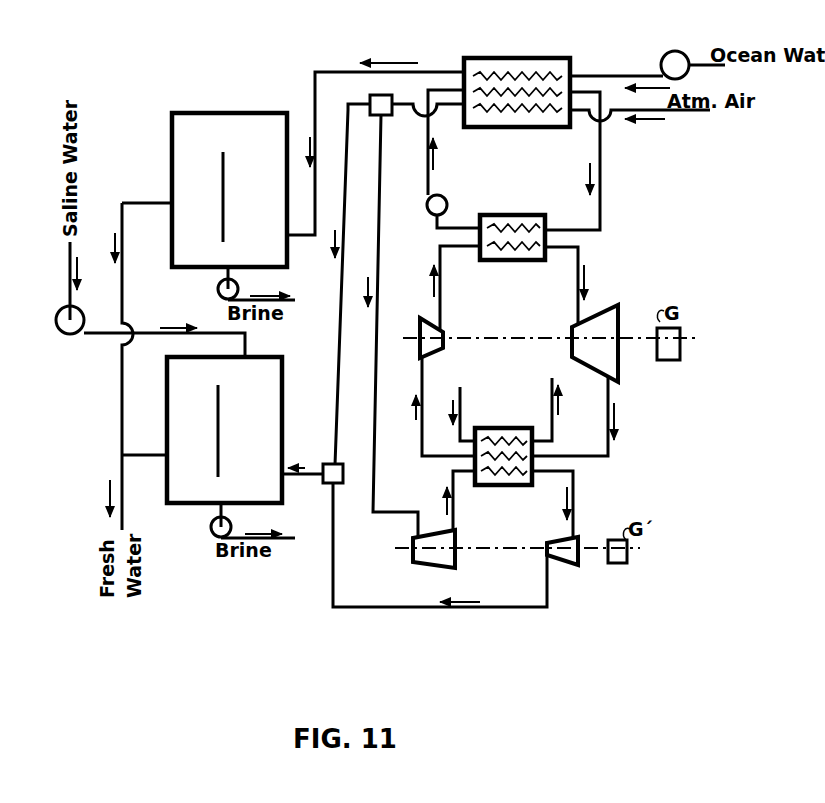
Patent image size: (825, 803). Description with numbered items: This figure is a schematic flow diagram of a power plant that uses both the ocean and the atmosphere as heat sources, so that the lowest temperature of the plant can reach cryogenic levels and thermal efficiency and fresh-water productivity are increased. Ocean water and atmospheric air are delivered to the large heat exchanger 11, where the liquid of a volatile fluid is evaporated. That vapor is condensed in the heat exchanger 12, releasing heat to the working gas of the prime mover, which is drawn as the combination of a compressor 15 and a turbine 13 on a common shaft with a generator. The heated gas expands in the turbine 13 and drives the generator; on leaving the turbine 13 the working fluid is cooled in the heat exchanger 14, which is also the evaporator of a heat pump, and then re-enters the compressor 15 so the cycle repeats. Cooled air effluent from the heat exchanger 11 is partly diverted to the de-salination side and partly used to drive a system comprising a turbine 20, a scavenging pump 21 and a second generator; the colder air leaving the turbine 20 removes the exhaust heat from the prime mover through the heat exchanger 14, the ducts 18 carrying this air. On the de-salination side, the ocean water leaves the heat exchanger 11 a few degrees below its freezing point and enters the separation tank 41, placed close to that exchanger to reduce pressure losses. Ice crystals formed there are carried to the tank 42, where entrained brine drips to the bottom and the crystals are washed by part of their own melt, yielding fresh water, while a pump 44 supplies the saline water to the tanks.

The heat exchanger 11 is at (490, 61).
The heat exchanger 12 is at (490, 215).
The turbine 13 is at (608, 308).
The heat exchanger 14 is at (515, 486).
The compressor 15 is at (443, 333).
The air ducts 18 is at (546, 406).
The turbine 20 is at (444, 566).
The scavenging pump 21 is at (558, 563).
The separation tank 41 is at (287, 197).
The tank 42 is at (174, 146).
The saline water pump 44 is at (60, 331).